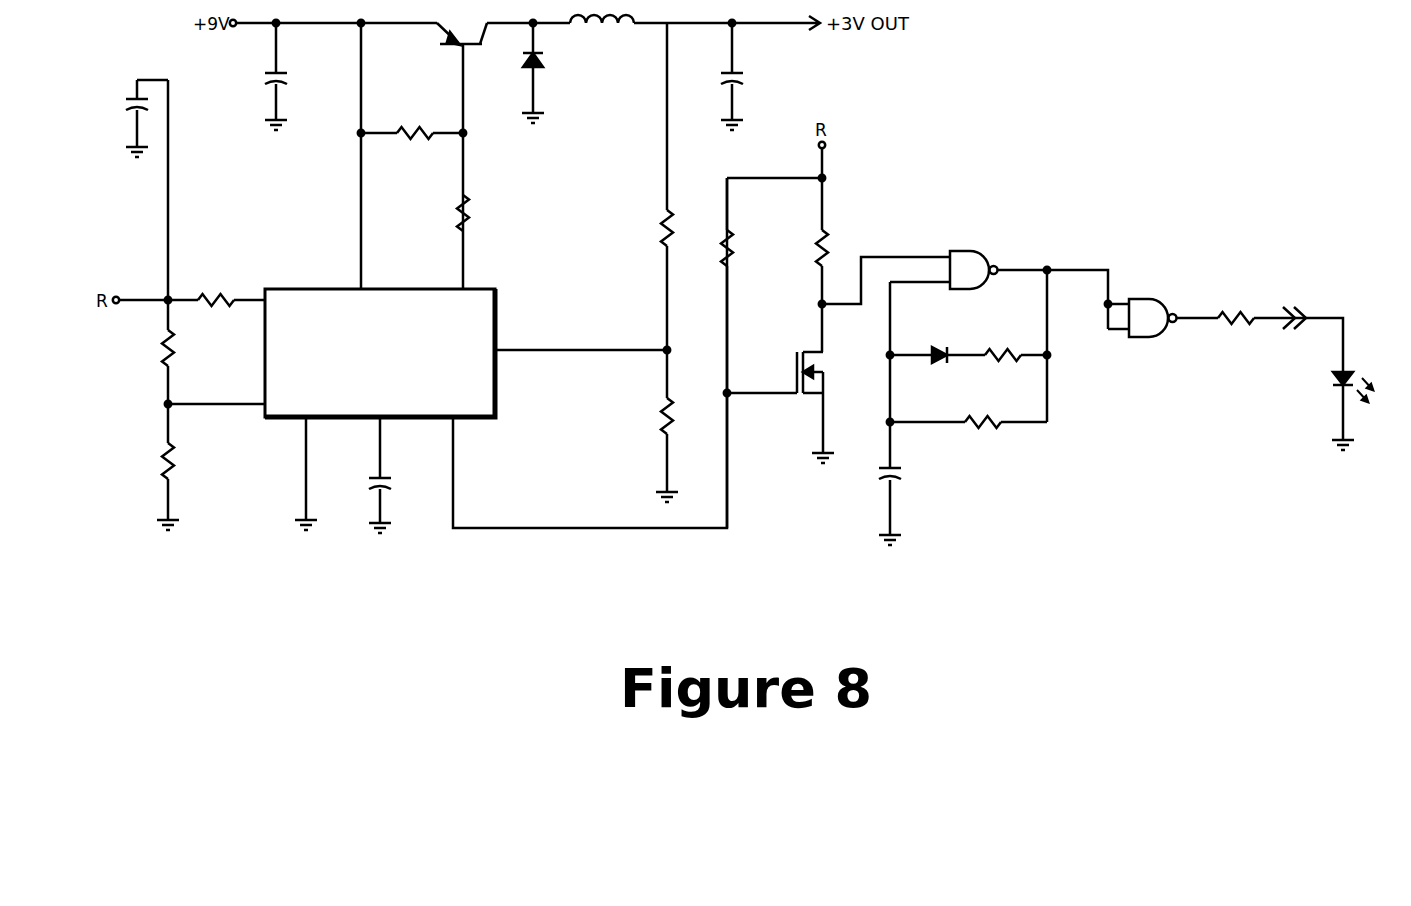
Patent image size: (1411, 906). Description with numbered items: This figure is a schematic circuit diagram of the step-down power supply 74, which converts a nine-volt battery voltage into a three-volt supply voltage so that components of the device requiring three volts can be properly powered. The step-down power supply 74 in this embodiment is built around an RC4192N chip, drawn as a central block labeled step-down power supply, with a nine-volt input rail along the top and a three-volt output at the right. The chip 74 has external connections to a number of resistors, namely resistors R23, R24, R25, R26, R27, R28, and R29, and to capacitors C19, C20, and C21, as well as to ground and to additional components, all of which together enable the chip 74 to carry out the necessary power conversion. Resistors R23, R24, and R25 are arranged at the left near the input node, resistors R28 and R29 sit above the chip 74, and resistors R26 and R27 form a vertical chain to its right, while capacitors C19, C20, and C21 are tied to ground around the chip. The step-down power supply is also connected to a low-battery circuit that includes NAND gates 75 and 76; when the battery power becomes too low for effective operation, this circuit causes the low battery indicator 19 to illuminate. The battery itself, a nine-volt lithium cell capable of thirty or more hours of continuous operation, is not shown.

The capacitor C19 is at (128, 108).
The capacitor C20 is at (268, 83).
The capacitor C21 is at (372, 488).
The resistor R23 is at (222, 298).
The resistor R24 is at (162, 360).
The resistor R25 is at (164, 470).
The resistor R26 is at (661, 428).
The resistor R27 is at (661, 228).
The resistor R28 is at (468, 222).
The resistor R29 is at (413, 137).
The step-down power supply 74 is at (497, 415).
The NAND gate 75 is at (958, 251).
The NAND gate 76 is at (1140, 299).
The low battery indicator 19 is at (1350, 372).